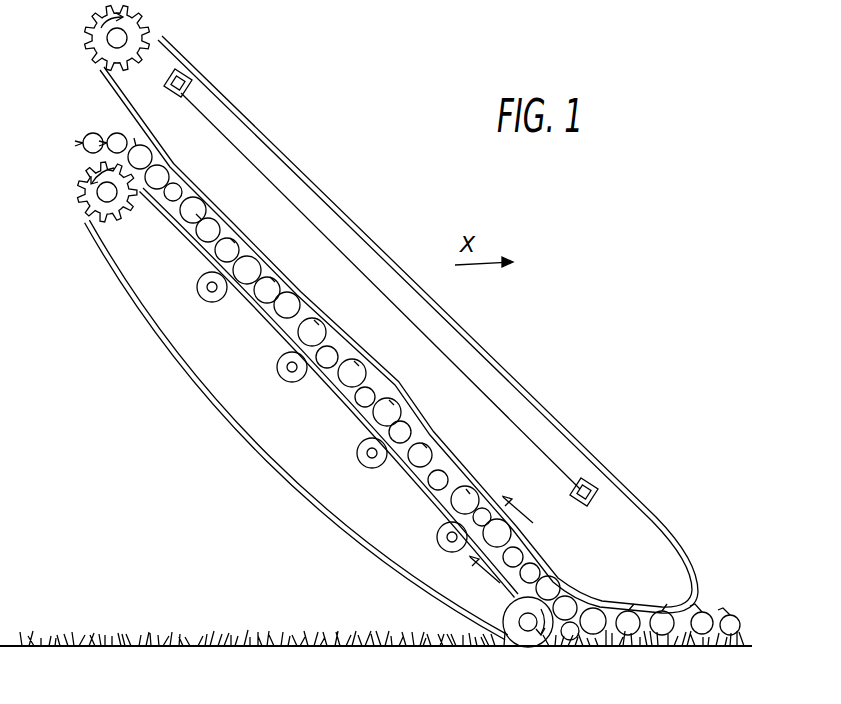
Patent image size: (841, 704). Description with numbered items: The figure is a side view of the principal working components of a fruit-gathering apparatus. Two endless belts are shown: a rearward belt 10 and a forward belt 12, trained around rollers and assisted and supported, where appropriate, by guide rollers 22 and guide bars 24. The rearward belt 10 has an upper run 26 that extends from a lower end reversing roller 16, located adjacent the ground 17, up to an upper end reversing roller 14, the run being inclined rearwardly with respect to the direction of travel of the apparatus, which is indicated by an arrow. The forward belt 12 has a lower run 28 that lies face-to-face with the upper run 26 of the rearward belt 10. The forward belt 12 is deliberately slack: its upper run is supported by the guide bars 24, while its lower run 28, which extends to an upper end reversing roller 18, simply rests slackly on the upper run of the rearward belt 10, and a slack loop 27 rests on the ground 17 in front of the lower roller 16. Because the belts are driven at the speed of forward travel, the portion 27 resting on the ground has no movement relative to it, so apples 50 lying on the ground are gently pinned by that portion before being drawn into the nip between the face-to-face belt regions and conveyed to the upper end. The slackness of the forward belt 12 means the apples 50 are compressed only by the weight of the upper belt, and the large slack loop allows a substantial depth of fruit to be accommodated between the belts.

The rearward belt 10 is at (245, 451).
The forward belt 12 is at (338, 208).
The upper end reversing roller 14 is at (80, 193).
The lower end reversing roller 16 is at (512, 636).
The ground 17 is at (232, 648).
The upper end reversing roller 18 is at (134, 34).
The guide rollers 22 is at (277, 365).
The guide bars 24 is at (253, 145).
The upper run 26 is at (353, 398).
The slack loop 27 is at (706, 598).
The lower run 28 is at (313, 305).
The apples 50 is at (433, 462).